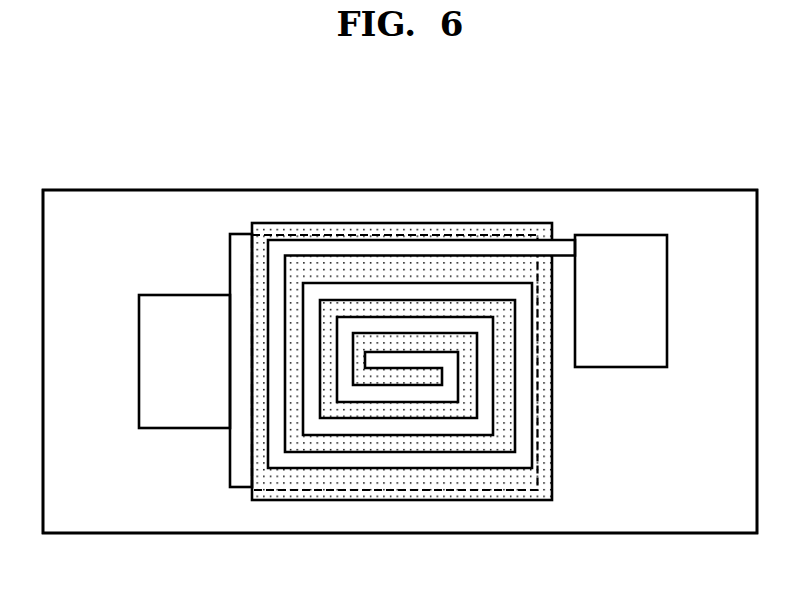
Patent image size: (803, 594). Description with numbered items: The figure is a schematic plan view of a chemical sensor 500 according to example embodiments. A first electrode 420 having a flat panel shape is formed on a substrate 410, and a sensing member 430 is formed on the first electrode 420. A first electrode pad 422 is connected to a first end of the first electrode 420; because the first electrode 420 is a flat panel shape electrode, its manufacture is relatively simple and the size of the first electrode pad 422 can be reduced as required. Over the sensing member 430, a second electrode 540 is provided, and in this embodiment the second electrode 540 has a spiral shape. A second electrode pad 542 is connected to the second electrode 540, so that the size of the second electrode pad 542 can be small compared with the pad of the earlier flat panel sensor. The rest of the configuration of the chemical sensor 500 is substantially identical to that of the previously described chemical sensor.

The chemical sensor 500 is at (157, 113).
The substrate 410 is at (553, 188).
The first electrode 420 is at (240, 477).
The first electrode pad 422 is at (165, 402).
The sensing member 430 is at (433, 493).
The second electrode 540 is at (492, 458).
The second electrode pad 542 is at (622, 250).